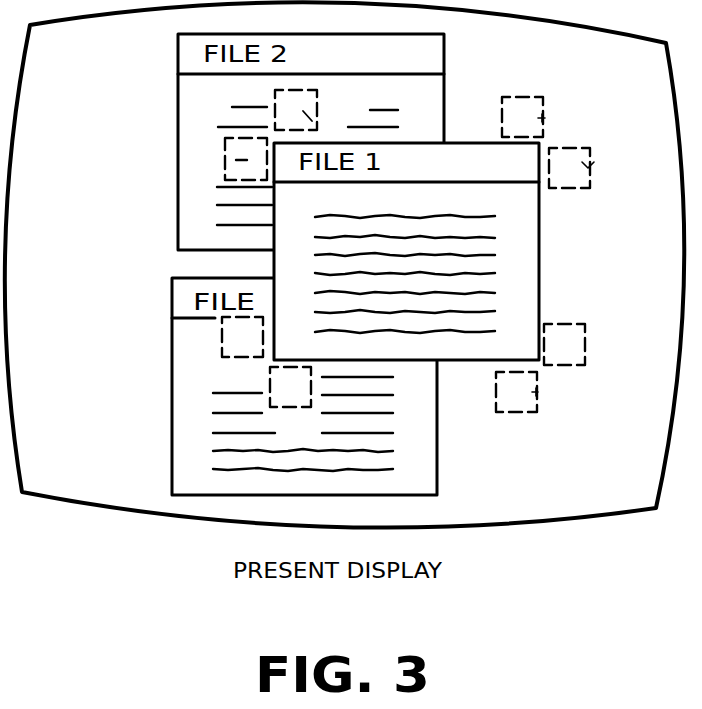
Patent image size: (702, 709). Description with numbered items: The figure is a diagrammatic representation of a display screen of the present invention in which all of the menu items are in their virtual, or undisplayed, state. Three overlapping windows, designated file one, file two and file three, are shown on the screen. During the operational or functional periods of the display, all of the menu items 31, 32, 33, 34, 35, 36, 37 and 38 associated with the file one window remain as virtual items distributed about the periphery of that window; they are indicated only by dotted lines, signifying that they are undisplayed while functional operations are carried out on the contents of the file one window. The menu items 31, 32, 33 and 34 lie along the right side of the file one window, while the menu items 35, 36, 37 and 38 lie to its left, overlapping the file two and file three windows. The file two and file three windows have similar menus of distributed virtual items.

The menu item 31 is at (549, 120).
The menu item 32 is at (594, 170).
The menu item 33 is at (590, 357).
The menu item 34 is at (540, 393).
The menu item 35 is at (281, 409).
The menu item 36 is at (249, 359).
The menu item 37 is at (225, 161).
The menu item 38 is at (319, 128).